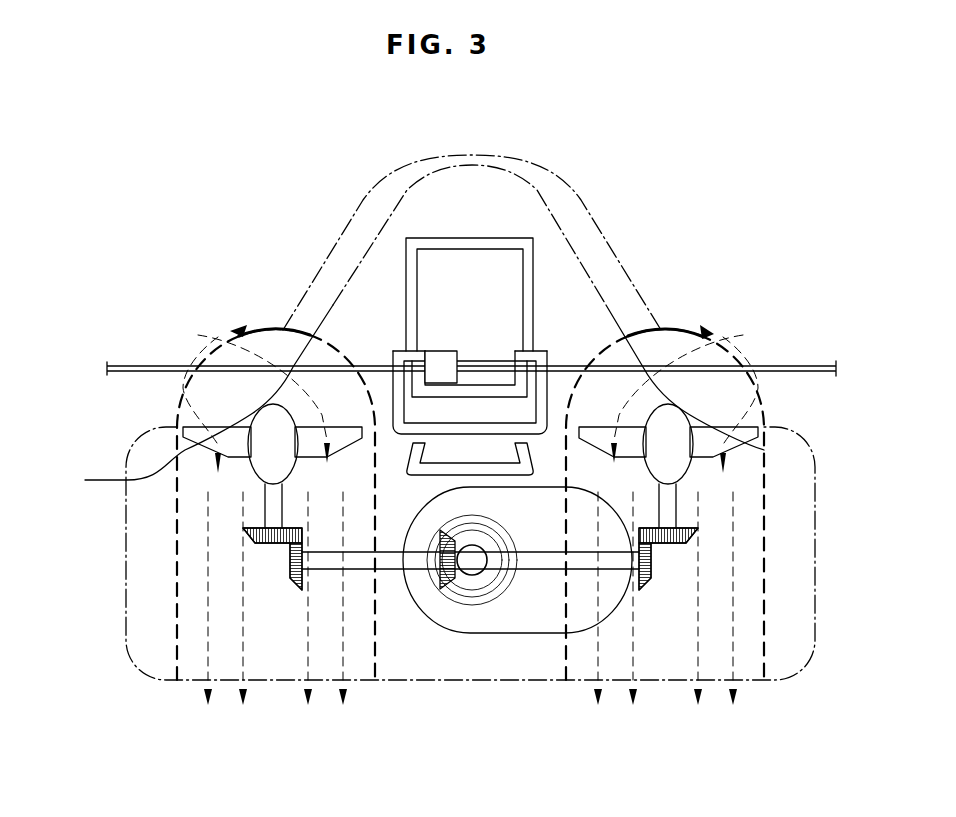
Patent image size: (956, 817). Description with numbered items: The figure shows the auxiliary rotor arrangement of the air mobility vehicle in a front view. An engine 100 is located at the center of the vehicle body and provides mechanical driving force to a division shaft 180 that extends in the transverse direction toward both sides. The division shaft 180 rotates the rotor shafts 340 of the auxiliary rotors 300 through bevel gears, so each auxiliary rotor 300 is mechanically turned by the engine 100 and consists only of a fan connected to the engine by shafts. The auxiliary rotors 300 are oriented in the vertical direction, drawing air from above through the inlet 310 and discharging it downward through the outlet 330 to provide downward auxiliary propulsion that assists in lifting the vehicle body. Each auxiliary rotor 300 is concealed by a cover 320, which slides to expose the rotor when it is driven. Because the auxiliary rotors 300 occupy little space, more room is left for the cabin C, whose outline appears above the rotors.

The engine 100 is at (522, 612).
The division shaft 180 is at (360, 567).
The auxiliary rotor 300 is at (396, 466).
The inlet 310 is at (156, 364).
The cover 320 is at (265, 343).
The outlet 330 is at (177, 653).
The rotor shaft 340 is at (273, 510).
The cabin C is at (383, 262).